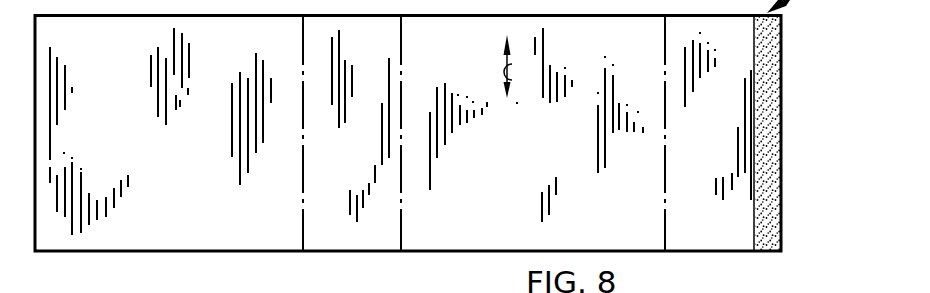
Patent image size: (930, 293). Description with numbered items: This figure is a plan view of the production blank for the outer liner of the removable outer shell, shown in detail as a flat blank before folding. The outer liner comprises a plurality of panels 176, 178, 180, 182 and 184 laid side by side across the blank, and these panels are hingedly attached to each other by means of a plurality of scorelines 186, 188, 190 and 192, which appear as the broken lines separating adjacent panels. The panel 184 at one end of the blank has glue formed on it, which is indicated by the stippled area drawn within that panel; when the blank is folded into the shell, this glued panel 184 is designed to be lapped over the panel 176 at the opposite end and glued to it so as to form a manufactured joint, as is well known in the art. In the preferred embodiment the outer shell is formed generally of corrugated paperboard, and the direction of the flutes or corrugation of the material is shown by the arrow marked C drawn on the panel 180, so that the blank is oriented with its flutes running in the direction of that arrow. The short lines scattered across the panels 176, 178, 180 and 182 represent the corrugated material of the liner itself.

The panel 176 is at (174, 163).
The panel 178 is at (371, 162).
The panel 180 is at (548, 162).
The panel 182 is at (727, 162).
The panel 184 is at (762, 172).
The scoreline 186 is at (302, 220).
The scoreline 188 is at (402, 235).
The scoreline 190 is at (664, 229).
The scoreline 192 is at (754, 230).